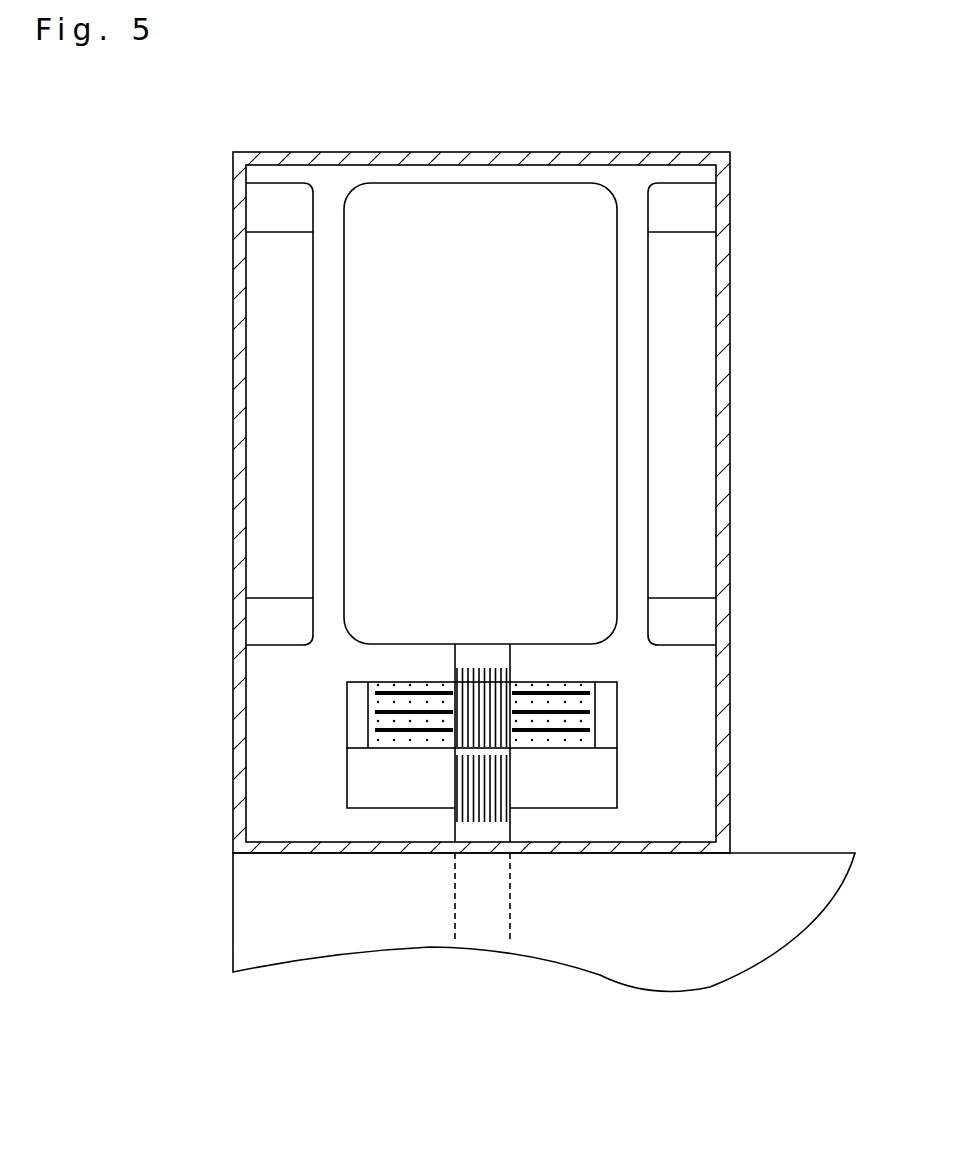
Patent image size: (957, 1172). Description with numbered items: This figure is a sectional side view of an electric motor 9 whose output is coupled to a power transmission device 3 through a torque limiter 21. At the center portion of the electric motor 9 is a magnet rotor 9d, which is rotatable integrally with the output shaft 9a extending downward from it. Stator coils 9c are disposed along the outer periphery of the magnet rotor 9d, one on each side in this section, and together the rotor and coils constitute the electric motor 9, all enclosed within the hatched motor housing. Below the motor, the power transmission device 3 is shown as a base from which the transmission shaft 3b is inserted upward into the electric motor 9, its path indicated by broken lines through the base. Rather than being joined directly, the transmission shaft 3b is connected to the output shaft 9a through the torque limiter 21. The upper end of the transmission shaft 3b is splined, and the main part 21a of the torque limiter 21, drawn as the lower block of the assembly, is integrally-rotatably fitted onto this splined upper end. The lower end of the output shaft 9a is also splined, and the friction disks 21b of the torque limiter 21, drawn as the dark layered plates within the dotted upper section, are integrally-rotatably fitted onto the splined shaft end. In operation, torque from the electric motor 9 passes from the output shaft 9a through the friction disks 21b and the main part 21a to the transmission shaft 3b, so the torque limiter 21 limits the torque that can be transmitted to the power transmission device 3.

The electric motor 9 is at (218, 522).
The output shaft 9a is at (462, 655).
The stator coils 9c is at (296, 439).
The magnet rotor 9d is at (466, 440).
The torque limiter 21 is at (426, 705).
The main part of the torque limiter 21a is at (360, 793).
The friction disks 21b is at (543, 708).
The power transmission device 3 is at (233, 905).
The transmission shaft 3b is at (503, 832).